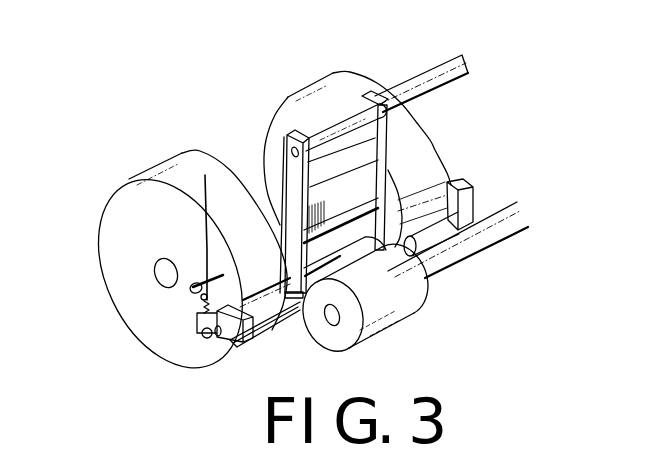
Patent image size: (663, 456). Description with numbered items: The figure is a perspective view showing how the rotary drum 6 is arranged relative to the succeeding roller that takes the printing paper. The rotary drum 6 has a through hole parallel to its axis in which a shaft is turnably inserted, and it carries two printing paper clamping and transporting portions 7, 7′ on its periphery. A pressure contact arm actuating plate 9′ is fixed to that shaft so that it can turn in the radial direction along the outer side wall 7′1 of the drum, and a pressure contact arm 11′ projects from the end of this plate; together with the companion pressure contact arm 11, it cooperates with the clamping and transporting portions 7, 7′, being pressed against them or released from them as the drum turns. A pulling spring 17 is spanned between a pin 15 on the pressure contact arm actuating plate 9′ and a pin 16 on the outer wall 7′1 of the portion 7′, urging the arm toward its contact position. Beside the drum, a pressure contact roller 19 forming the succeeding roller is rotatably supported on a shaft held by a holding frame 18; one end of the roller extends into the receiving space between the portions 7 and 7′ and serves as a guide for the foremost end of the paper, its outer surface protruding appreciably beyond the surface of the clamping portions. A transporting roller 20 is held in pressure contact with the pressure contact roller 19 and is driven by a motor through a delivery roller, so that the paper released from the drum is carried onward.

The rotary drum 6 is at (240, 114).
The printing paper clamping and transporting portion 7 is at (334, 74).
The printing paper clamping and transporting portion 7′ is at (176, 156).
The outer side wall 7′1 is at (108, 270).
The pressure contact arm actuating plate 9′ is at (228, 345).
The pressure contact arm 11 is at (442, 228).
The pressure contact arm 11′ is at (290, 299).
The pin 15 is at (205, 338).
The pin 16 is at (205, 175).
The pulling spring 17 is at (197, 318).
The holding frame 18 is at (292, 151).
The pressure contact roller 19 is at (345, 258).
The transporting roller 20 is at (393, 320).